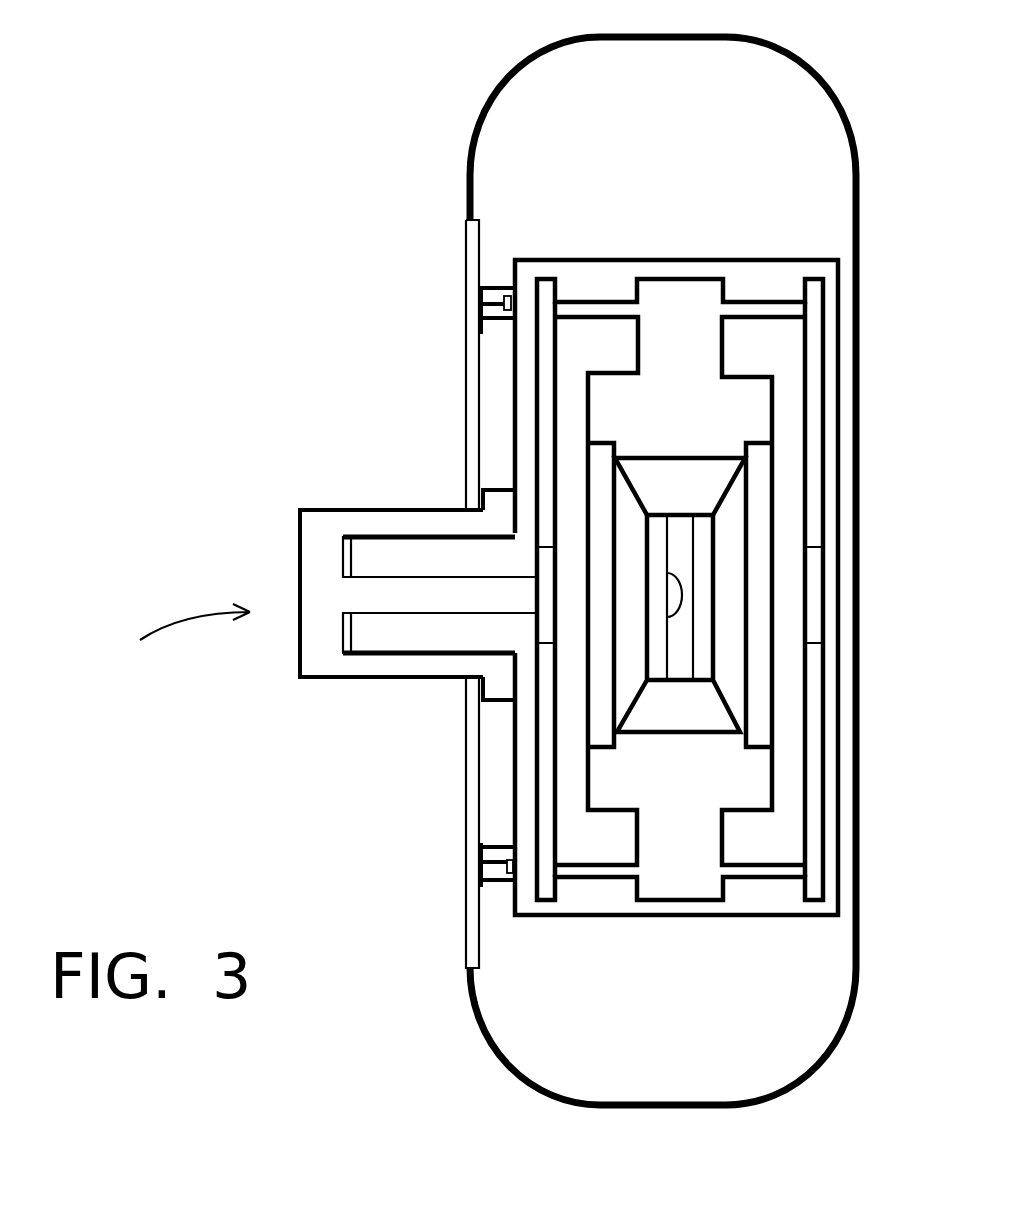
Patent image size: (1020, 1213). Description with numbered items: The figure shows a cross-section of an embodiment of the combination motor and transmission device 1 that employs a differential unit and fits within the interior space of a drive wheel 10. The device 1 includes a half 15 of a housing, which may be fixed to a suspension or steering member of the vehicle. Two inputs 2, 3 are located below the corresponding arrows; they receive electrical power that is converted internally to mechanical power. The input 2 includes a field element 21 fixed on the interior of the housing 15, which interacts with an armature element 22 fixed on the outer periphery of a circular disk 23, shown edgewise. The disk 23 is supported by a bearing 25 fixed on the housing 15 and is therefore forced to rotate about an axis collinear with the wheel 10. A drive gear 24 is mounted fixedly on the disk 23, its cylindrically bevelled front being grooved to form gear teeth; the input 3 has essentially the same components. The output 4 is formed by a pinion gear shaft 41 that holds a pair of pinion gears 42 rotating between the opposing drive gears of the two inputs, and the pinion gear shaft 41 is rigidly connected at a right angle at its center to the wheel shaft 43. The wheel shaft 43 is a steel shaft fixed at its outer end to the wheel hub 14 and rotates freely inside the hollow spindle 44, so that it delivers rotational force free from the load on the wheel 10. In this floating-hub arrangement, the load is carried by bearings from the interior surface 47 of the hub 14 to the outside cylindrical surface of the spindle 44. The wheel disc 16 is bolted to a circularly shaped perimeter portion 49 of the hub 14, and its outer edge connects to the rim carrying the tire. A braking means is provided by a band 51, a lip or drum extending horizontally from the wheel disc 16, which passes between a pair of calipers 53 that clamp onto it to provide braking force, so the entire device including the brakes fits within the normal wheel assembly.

The combination motor and transmission device 1 is at (209, 128).
The input 2 is at (619, 229).
The input 3 is at (763, 227).
The output 4 is at (183, 657).
The drive wheel 10 is at (507, 83).
The wheel hub 14 is at (299, 558).
The half of housing 15 is at (843, 346).
The wheel disc 16 is at (464, 828).
The field element 21 is at (636, 301).
The armature element 22 is at (641, 362).
The circular disk 23 is at (588, 420).
The drive gear 24 is at (615, 457).
The bearing 25 is at (547, 558).
The pinion gear shaft 41 is at (662, 657).
The pinion gears 42 is at (682, 737).
The wheel shaft 43 is at (445, 575).
The spindle 44 is at (481, 657).
The interior surface 47 is at (393, 655).
The perimeter portion 49 is at (498, 701).
The band 51 is at (483, 313).
The calipers 53 is at (505, 285).